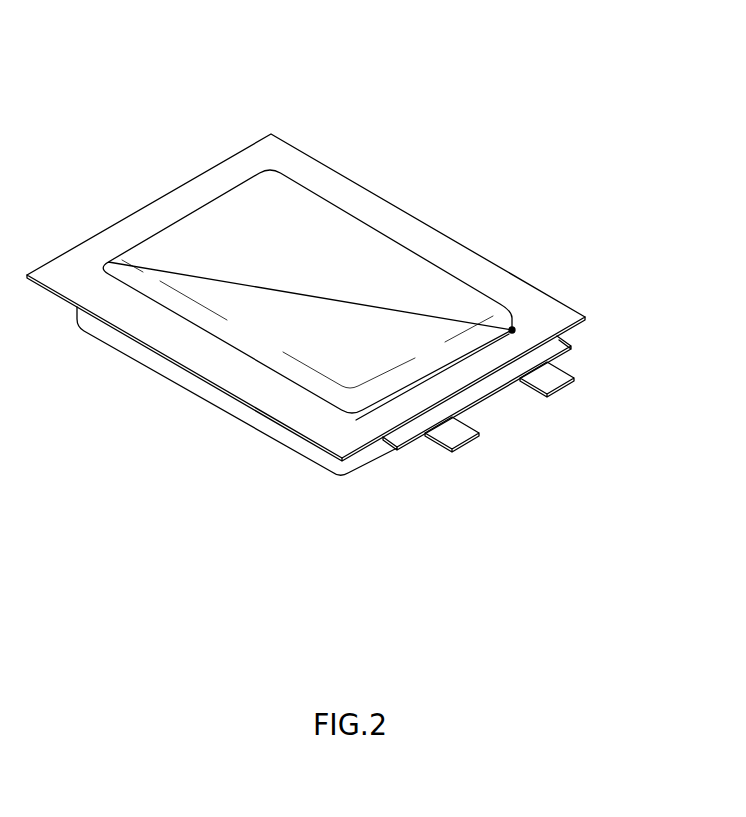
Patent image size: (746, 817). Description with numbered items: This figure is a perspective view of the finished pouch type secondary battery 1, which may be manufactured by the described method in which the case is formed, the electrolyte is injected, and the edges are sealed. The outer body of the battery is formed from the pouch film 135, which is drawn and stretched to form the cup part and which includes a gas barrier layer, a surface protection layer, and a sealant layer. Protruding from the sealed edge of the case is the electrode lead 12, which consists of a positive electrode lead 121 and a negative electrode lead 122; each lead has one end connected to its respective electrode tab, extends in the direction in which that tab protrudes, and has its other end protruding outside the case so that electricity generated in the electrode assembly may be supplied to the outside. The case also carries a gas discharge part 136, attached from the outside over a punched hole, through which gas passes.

The pouch type secondary battery 1 is at (327, 283).
The electrode lead 12 is at (523, 445).
The positive electrode lead 121 is at (571, 410).
The negative electrode lead 122 is at (459, 434).
The pouch film 135 is at (503, 340).
The gas discharge part 136 is at (516, 329).